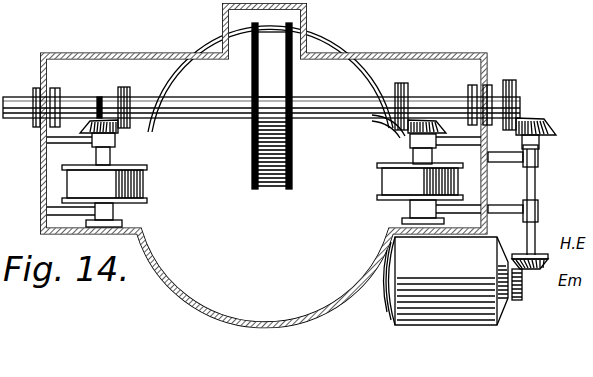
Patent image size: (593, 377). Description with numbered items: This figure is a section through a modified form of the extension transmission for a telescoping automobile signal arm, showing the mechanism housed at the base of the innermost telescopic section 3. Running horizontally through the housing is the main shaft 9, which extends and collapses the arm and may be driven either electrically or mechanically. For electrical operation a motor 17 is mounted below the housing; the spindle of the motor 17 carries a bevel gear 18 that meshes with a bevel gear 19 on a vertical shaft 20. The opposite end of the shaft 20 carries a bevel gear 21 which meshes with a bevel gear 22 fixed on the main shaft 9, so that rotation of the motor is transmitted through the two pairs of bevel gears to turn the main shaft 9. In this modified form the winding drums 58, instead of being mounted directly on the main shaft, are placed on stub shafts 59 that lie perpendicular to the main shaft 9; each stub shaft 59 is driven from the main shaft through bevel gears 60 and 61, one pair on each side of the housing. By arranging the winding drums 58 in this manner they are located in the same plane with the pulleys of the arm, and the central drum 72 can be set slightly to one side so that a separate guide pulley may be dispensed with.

The telescopic section 3 is at (46, 55).
The shaft 9 is at (363, 100).
The motor 17 is at (412, 326).
The bevel gear 18 is at (521, 302).
The bevel gear 19 is at (536, 270).
The shaft 20 is at (540, 231).
The bevel gear 21 is at (549, 134).
The bevel gear 22 is at (517, 104).
The winding drum 58 is at (143, 200).
The stub shaft 59 is at (410, 204).
The bevel gear 60 is at (129, 92).
The bevel gear 61 is at (100, 89).
The central spool 72 is at (252, 163).